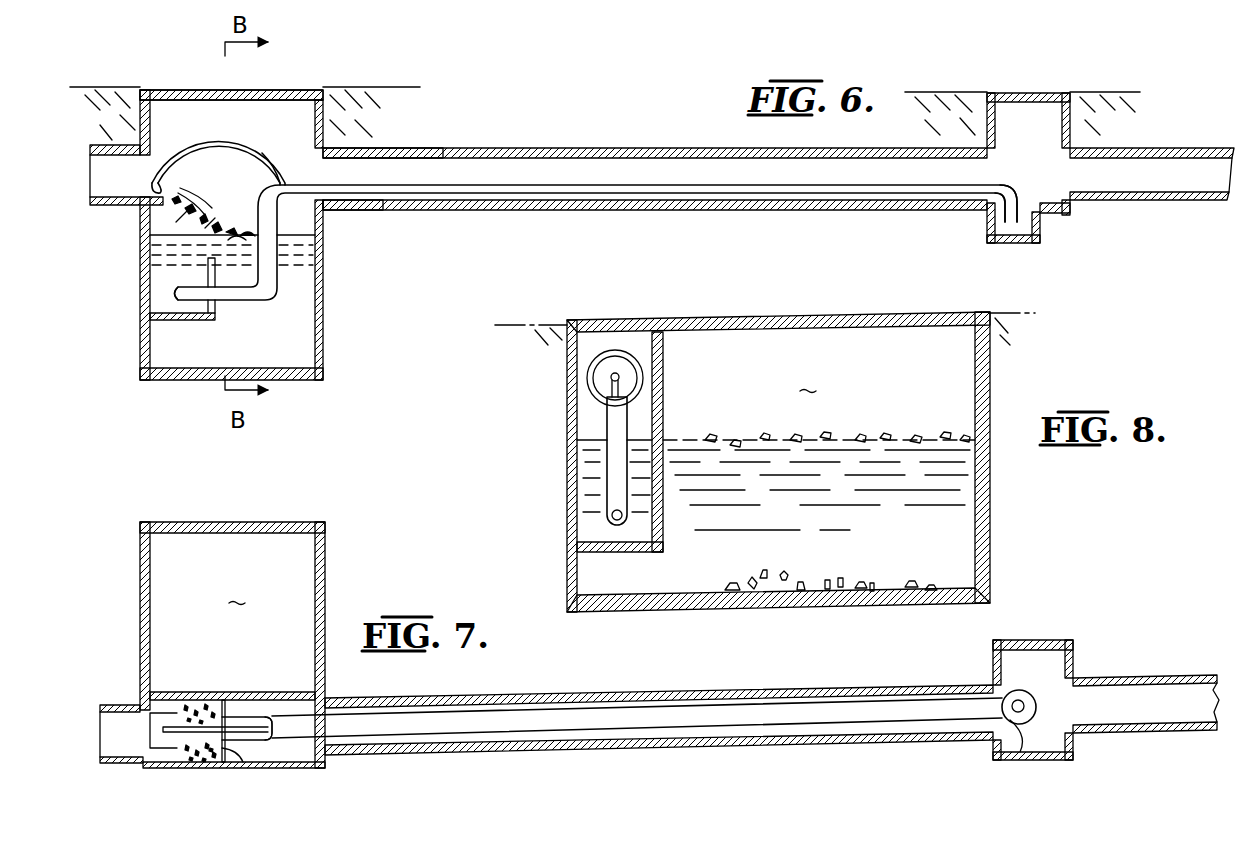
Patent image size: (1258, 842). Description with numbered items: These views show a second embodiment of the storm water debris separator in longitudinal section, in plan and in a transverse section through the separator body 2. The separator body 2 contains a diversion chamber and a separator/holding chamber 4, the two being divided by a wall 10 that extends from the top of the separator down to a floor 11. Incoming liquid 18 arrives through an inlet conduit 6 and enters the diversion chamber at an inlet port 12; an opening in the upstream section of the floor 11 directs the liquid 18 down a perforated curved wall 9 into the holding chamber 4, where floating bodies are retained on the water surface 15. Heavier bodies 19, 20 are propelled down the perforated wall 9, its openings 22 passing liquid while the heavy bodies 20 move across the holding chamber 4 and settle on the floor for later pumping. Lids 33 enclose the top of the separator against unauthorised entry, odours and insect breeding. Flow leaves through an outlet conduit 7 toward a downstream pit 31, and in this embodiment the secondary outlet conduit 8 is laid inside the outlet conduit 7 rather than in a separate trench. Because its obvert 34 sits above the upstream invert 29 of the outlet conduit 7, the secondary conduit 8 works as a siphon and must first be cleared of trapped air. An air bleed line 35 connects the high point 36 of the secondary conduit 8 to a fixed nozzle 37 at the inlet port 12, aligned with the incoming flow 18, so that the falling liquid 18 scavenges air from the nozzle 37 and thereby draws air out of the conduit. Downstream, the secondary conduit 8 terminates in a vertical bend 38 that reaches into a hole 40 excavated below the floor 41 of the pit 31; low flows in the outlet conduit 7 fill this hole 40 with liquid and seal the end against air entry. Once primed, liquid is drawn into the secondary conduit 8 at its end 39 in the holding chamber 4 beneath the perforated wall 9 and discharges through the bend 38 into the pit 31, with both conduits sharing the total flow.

In FIG. 6, the separator body 2 is at (270, 258).
In FIG. 8, the separator body 2 is at (778, 462).
In FIG. 7, the separator body 2 is at (328, 548).
In FIG. 8, the separator/holding chamber 4 is at (808, 379).
In FIG. 7, the separator/holding chamber 4 is at (237, 591).
In FIG. 6, the inlet conduit 6 is at (122, 207).
In FIG. 7, the inlet conduit 6 is at (130, 765).
In FIG. 6, the outlet conduit 7 is at (653, 183).
In FIG. 8, the outlet conduit 7 is at (592, 366).
In FIG. 7, the outlet conduit 7 is at (630, 695).
In FIG. 6, the secondary outlet conduit 8 is at (608, 193).
In FIG. 8, the secondary outlet conduit 8 is at (608, 383).
In FIG. 7, the secondary outlet conduit 8 is at (652, 716).
In FIG. 6, the perforated curved wall 9 is at (237, 313).
In FIG. 7, the perforated curved wall 9 is at (243, 765).
In FIG. 8, the wall 10 is at (665, 390).
In FIG. 7, the wall 10 is at (185, 700).
In FIG. 6, the floor 11 is at (305, 373).
In FIG. 7, the inlet port 12 is at (142, 722).
In FIG. 8, the water surface 15 is at (883, 435).
In FIG. 6, the liquid 18 is at (197, 197).
In FIG. 8, the heavier bodies 19 is at (735, 440).
In FIG. 8, the heavy bodies 20 is at (840, 600).
In FIG. 6, the openings 22 is at (195, 220).
In FIG. 6, the upstream invert 29 is at (327, 210).
In FIG. 6, the downstream pit 31 is at (1110, 177).
In FIG. 7, the downstream pit 31 is at (1070, 640).
In FIG. 6, the lids 33 is at (195, 92).
In FIG. 6, the obvert 34 is at (320, 178).
In FIG. 6, the air bleed line 35 is at (224, 111).
In FIG. 8, the air bleed line 35 is at (628, 370).
In FIG. 7, the air bleed line 35 is at (237, 716).
In FIG. 6, the high point 36 is at (290, 180).
In FIG. 7, the high point 36 is at (272, 732).
In FIG. 6, the fixed nozzle 37 is at (178, 168).
In FIG. 7, the vertical bend 38 is at (1020, 760).
In FIG. 8, the end 39 is at (607, 513).
In FIG. 7, the end 39 is at (190, 760).
In FIG. 6, the hole 40 is at (1028, 243).
In FIG. 7, the hole 40 is at (1022, 698).
In FIG. 6, the floor 41 is at (1068, 217).